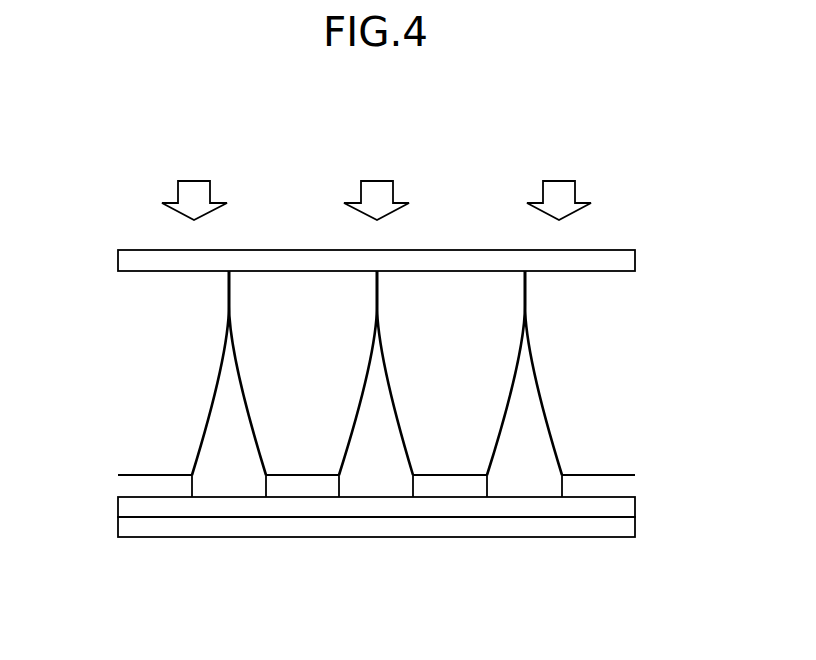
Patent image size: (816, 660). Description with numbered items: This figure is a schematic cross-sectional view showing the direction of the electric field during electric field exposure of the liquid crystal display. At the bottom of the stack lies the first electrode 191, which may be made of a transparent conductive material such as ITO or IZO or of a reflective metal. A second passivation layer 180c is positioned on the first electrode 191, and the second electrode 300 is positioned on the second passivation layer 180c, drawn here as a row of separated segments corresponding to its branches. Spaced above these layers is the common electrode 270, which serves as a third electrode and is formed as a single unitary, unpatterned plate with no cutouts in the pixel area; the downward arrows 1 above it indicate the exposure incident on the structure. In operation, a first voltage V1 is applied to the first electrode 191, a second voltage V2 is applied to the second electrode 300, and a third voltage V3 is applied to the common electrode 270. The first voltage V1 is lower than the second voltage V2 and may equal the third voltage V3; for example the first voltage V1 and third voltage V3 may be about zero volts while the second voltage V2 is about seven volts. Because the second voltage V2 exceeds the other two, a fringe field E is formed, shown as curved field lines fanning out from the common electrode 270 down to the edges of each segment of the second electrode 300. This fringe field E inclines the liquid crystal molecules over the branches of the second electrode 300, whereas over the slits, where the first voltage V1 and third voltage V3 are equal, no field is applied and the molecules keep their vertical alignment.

The light 1 is at (570, 192).
The common electrode 270 is at (626, 261).
The fringe field E is at (531, 350).
The second electrode 300 is at (629, 487).
The second passivation layer 180c is at (630, 500).
The first electrode 191 is at (630, 527).
The first voltage V1 is at (117, 256).
The second voltage V2 is at (116, 476).
The third voltage V3 is at (116, 527).